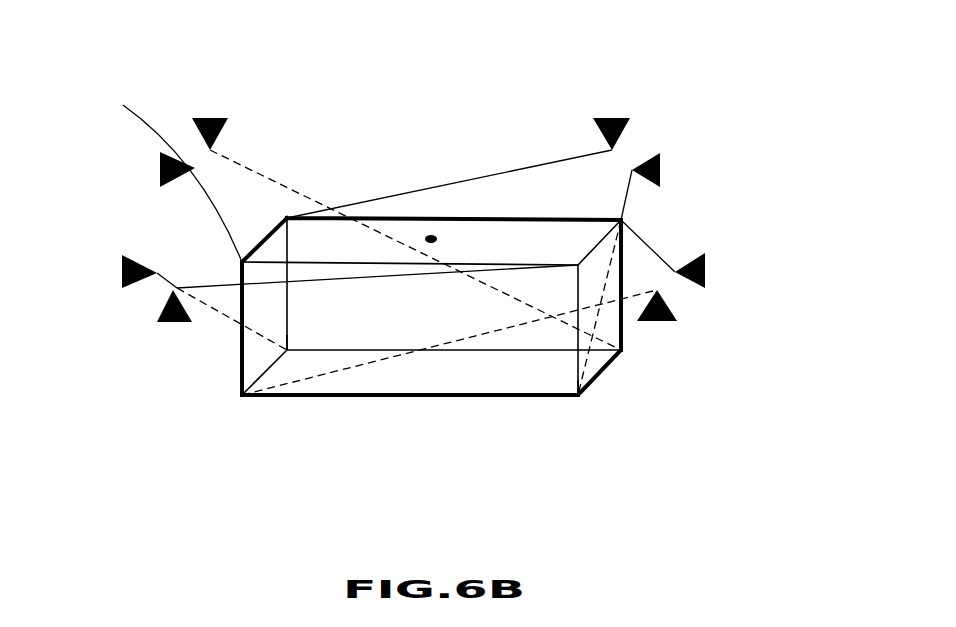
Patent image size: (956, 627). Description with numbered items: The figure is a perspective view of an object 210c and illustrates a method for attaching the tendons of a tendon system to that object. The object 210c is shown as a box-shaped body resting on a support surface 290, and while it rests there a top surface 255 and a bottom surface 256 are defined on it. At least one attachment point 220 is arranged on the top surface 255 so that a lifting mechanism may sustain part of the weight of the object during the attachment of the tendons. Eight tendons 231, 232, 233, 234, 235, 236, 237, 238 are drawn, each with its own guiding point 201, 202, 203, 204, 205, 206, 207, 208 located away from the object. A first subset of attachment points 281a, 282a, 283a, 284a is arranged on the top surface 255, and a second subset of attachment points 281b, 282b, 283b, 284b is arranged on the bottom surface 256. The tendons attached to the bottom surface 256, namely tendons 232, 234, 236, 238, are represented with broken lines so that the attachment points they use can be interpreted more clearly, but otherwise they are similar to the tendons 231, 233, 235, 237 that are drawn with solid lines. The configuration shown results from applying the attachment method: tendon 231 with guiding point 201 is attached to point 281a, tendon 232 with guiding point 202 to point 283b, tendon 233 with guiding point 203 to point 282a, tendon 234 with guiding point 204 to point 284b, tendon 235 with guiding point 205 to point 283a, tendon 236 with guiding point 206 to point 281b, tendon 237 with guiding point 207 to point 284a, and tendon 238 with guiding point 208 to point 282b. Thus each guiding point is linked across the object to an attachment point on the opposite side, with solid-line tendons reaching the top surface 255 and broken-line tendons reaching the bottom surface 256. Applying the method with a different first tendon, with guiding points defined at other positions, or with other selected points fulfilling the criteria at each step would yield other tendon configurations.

The guiding point 201 is at (141, 129).
The guiding point 202 is at (200, 118).
The guiding point 203 is at (627, 120).
The guiding point 204 is at (660, 153).
The guiding point 205 is at (705, 262).
The guiding point 206 is at (677, 317).
The guiding point 207 is at (157, 310).
The guiding point 208 is at (122, 270).
The tendon 231 is at (203, 185).
The tendon 232 is at (257, 170).
The tendon 233 is at (465, 180).
The tendon 234 is at (623, 197).
The tendon 235 is at (637, 232).
The tendon 236 is at (625, 300).
The tendon 237 is at (215, 287).
The tendon 238 is at (235, 317).
The attachment point 220 is at (432, 234).
The object 210c is at (416, 382).
The top surface 255 is at (539, 253).
The bottom surface 256 is at (463, 388).
The attachment point 281a is at (242, 262).
The attachment point 281b is at (242, 397).
The attachment point 282a is at (287, 218).
The attachment point 282b is at (278, 398).
The attachment point 283a is at (618, 217).
The attachment point 283b is at (622, 352).
The attachment point 284a is at (578, 265).
The attachment point 284b is at (578, 395).
The support surface 290 is at (318, 449).